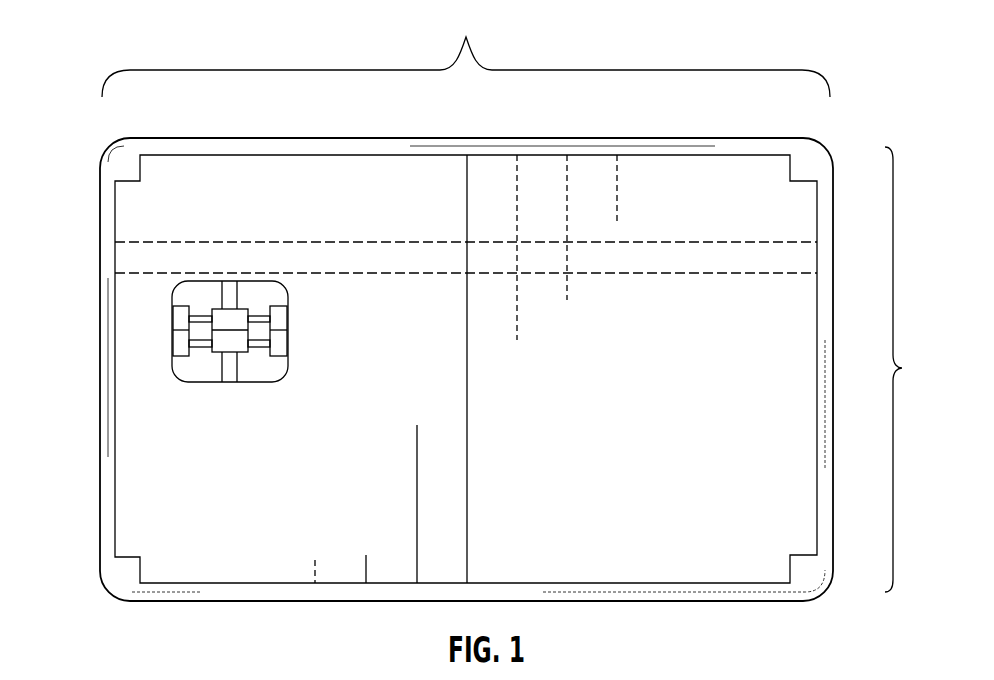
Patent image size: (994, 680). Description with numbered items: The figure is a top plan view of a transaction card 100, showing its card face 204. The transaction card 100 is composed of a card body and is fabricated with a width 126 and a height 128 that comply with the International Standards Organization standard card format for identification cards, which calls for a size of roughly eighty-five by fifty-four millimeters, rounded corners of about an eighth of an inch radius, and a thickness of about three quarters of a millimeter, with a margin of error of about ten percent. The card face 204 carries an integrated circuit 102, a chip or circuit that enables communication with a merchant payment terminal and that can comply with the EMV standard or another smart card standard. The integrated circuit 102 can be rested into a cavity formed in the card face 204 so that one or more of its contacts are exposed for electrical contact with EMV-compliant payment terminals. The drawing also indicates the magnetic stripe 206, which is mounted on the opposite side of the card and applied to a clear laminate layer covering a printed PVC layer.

The transaction card 100 is at (105, 57).
The integrated circuit 102 is at (190, 372).
The width 126 is at (466, 53).
The height 128 is at (916, 369).
The card face 204 is at (802, 212).
The magnetic stripe 206 is at (652, 262).